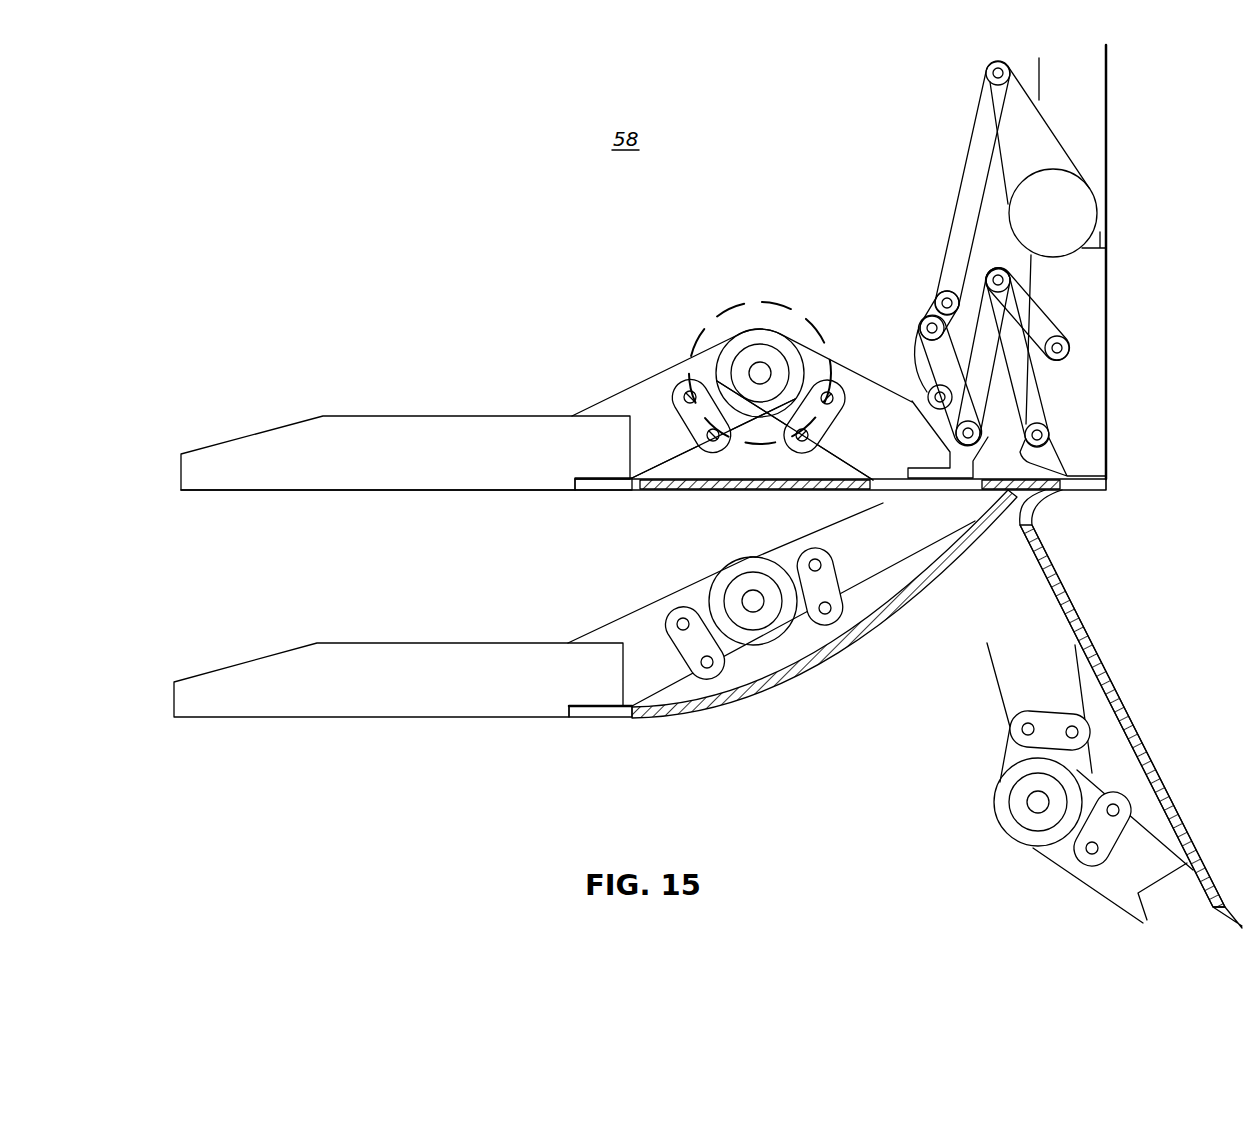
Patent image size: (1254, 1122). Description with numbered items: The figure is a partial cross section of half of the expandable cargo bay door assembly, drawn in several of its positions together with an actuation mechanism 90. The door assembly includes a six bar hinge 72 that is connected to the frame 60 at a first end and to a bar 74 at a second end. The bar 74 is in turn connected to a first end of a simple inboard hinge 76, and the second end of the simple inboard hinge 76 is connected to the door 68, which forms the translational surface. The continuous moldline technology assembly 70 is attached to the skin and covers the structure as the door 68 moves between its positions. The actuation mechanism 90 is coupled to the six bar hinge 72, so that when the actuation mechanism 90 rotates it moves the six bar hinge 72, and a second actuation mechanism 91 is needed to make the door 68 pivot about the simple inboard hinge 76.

The frame 60 is at (1100, 240).
The doors 68 is at (353, 416).
The continuous moldline technology (CMT) assembly 70 is at (708, 492).
The six bar hinge assembly 72 is at (1040, 313).
The bar 74 is at (863, 403).
The simple inboard hinge 76 is at (757, 330).
The actuation mechanism 90 is at (1022, 122).
The second actuation mechanism 91 is at (769, 303).